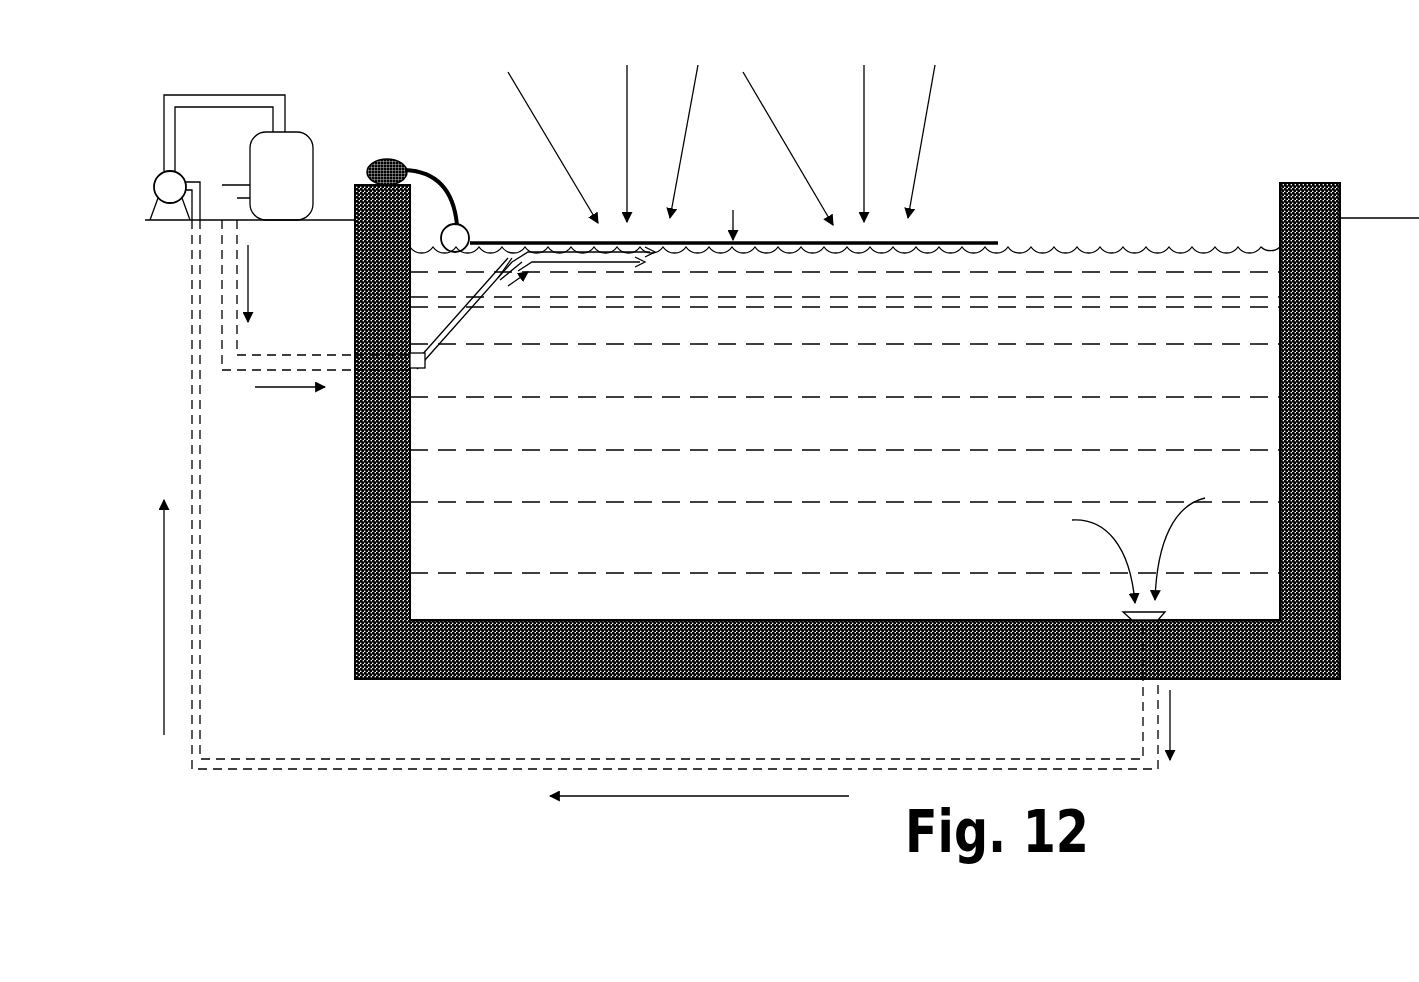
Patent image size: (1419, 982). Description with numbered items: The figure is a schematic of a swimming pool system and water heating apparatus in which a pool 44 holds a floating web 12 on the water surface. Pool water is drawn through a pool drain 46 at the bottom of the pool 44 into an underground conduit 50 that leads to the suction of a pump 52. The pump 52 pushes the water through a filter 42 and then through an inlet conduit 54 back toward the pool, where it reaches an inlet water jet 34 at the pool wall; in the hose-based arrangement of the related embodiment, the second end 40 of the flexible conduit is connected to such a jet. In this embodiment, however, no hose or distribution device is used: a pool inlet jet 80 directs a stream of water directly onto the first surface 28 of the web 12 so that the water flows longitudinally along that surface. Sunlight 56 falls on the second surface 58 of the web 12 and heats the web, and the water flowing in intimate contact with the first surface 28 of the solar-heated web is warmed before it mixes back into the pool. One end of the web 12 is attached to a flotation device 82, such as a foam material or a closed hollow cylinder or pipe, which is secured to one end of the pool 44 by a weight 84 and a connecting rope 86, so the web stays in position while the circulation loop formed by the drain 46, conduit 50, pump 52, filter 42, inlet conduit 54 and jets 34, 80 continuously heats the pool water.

The web 12 is at (953, 240).
The first surface 28 is at (777, 247).
The inlet water jet 34 is at (412, 368).
The second end 40 is at (428, 372).
The filter 42 is at (267, 176).
The pool 44 is at (1310, 200).
The pool drain 46 is at (1162, 612).
The underground conduit 50 is at (253, 761).
The pump 52 is at (217, 157).
The inlet conduit 54 is at (277, 362).
The sunlight 56 is at (721, 145).
The second surface 58 is at (733, 209).
The pool inlet jet 80 is at (475, 322).
The flotation device 82 is at (460, 222).
The weight 84 is at (387, 158).
The connecting rope 86 is at (432, 168).